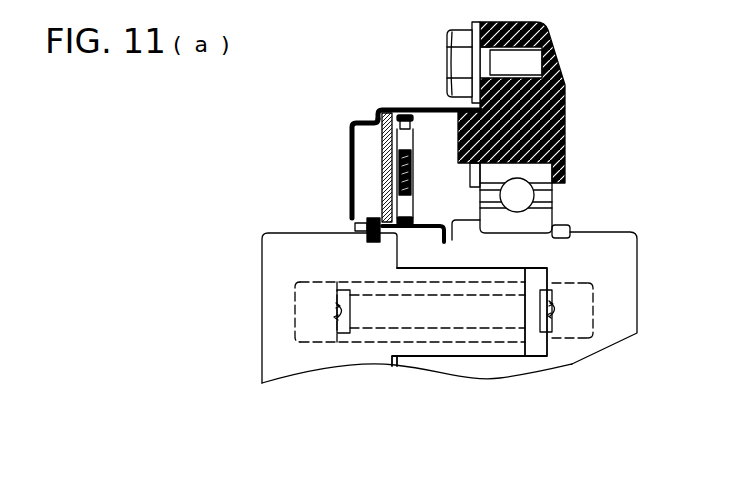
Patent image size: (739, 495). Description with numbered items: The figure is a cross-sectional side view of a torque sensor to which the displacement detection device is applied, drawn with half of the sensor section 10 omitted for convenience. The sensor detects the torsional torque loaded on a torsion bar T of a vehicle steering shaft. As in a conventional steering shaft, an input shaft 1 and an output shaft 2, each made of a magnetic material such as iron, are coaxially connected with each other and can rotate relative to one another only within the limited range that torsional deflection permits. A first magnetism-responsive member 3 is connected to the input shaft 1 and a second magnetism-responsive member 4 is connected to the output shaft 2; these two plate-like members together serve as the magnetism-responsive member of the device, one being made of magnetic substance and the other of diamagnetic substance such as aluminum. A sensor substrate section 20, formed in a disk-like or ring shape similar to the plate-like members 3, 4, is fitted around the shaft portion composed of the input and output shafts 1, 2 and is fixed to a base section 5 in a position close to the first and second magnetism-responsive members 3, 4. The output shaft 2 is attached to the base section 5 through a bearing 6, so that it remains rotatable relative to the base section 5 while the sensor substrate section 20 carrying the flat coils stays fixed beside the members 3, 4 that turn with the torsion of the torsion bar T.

The input shaft 1 is at (276, 236).
The output shaft 2 is at (600, 232).
The first magnetism-responsive member 3 is at (414, 160).
The second magnetism-responsive member 4 is at (393, 108).
The base section 5 is at (565, 82).
The bearing 6 is at (540, 218).
The sensor section 10 is at (368, 100).
The sensor substrate section 20 is at (382, 155).
The torsion bar T is at (532, 330).